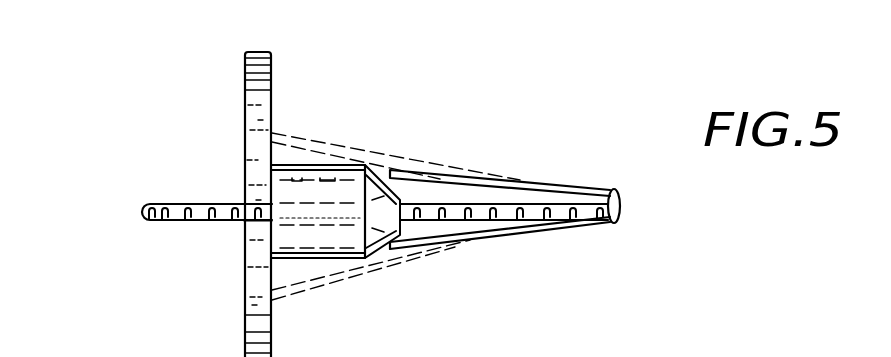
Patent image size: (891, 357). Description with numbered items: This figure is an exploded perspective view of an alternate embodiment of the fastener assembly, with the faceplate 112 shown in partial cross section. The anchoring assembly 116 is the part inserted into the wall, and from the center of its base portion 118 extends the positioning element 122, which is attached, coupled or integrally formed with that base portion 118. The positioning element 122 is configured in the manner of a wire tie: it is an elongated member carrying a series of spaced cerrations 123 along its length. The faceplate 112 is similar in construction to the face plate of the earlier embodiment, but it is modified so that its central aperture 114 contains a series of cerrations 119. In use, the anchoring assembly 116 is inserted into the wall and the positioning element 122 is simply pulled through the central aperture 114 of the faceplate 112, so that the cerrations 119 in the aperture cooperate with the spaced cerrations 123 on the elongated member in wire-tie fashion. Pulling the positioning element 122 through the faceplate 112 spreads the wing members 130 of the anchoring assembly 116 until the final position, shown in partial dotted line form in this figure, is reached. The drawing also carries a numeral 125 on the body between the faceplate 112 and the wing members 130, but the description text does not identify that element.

The faceplate 112 is at (262, 322).
The central aperture 114 is at (268, 200).
The anchoring assembly 116 is at (572, 175).
The base portion 118 is at (620, 206).
The cerrations 119 is at (266, 222).
The positioning element 122 is at (148, 225).
The spaced cerrations 123 is at (173, 203).
The housing body 125 is at (333, 230).
The wing members 130 is at (478, 198).